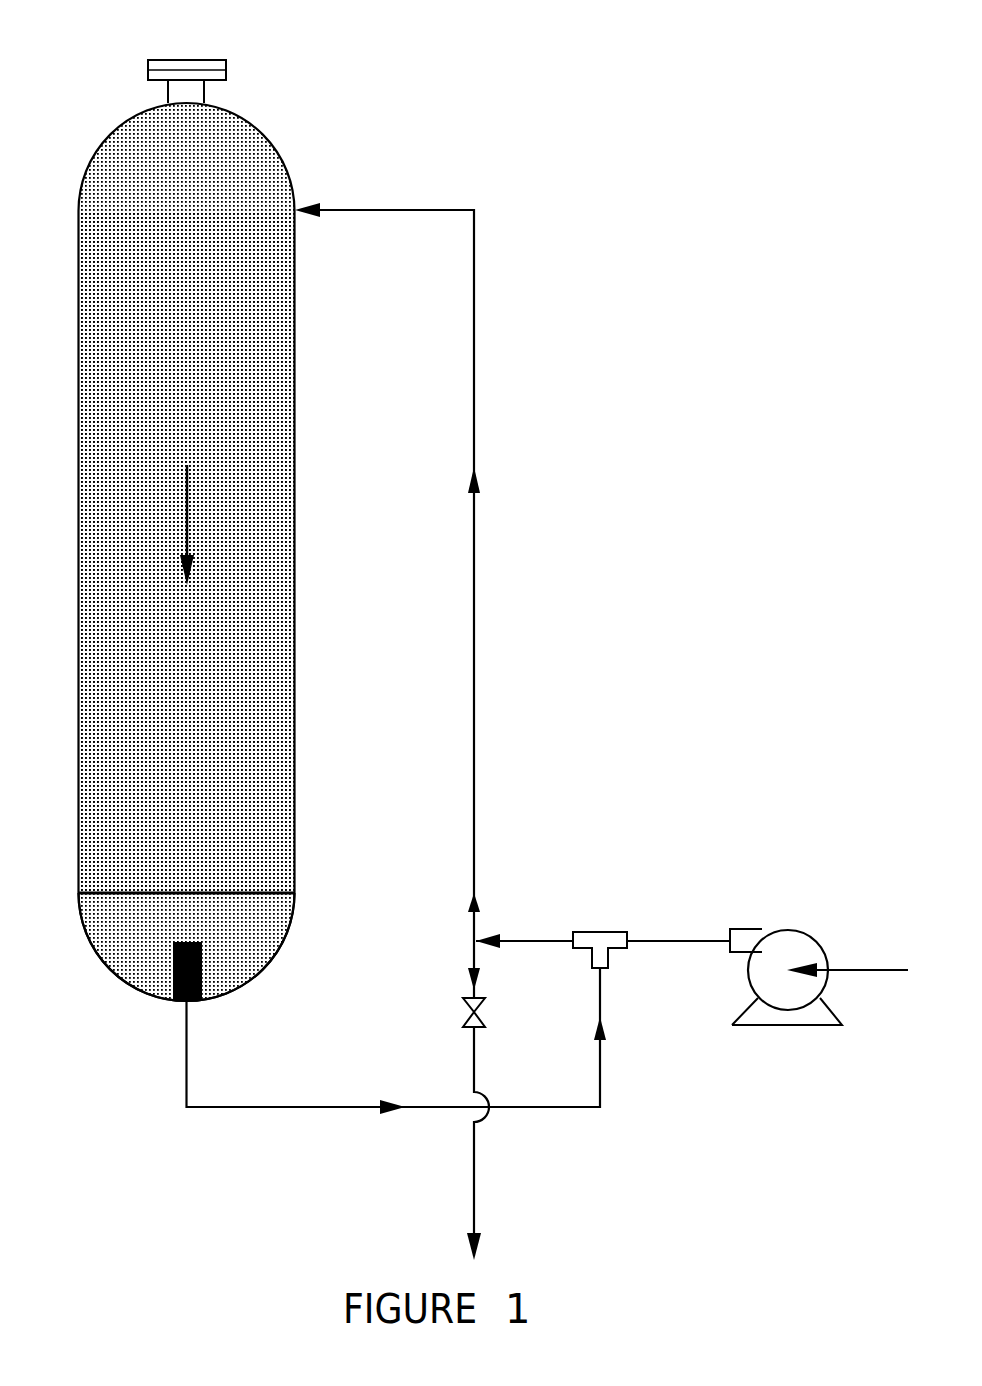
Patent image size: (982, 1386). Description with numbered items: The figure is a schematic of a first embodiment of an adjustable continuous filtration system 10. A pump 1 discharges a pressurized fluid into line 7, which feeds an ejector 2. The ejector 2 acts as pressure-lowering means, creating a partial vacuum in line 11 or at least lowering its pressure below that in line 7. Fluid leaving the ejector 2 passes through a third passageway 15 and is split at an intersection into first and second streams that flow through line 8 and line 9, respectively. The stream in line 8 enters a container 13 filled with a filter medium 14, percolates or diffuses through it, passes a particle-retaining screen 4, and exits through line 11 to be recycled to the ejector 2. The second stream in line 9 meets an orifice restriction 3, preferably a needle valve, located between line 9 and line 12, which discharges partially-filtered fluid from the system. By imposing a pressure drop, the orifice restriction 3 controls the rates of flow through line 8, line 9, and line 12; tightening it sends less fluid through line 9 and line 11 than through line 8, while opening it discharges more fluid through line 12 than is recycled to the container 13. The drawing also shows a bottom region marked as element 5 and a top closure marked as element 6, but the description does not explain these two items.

The pump 1 is at (760, 929).
The ejector 2 is at (600, 940).
The orifice restriction 3 is at (466, 1010).
The particle-retaining screen 4 is at (203, 983).
The bottom section of vessel 5 is at (273, 960).
The top closure 6 is at (190, 60).
The line 7 is at (660, 940).
The line 8 is at (473, 527).
The line 9 is at (474, 958).
The adjustable continuous filtration system 10 is at (370, 124).
The line 11 is at (432, 1107).
The line 12 is at (472, 1183).
The container 13 is at (295, 273).
The filter medium 14 is at (272, 352).
The third passageway 15 is at (523, 941).